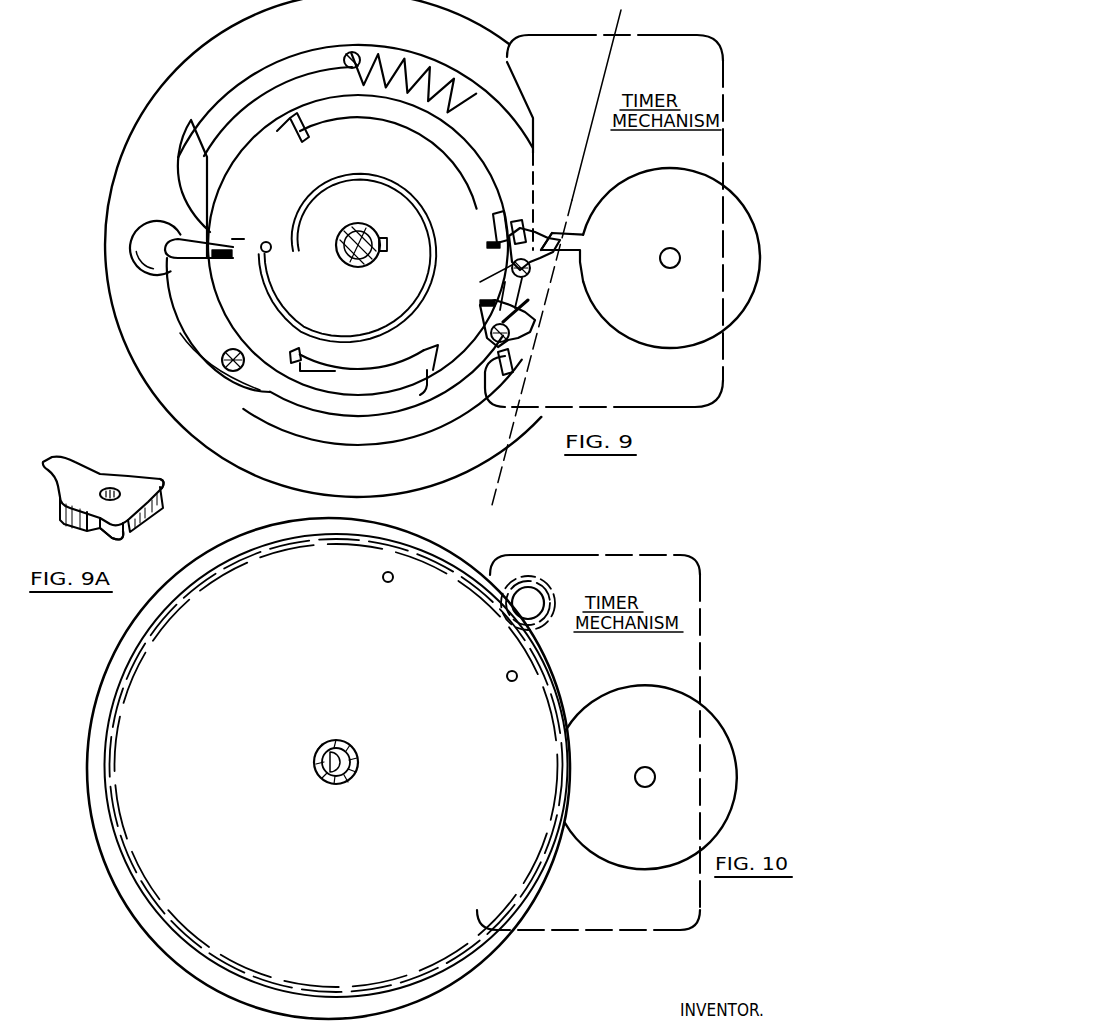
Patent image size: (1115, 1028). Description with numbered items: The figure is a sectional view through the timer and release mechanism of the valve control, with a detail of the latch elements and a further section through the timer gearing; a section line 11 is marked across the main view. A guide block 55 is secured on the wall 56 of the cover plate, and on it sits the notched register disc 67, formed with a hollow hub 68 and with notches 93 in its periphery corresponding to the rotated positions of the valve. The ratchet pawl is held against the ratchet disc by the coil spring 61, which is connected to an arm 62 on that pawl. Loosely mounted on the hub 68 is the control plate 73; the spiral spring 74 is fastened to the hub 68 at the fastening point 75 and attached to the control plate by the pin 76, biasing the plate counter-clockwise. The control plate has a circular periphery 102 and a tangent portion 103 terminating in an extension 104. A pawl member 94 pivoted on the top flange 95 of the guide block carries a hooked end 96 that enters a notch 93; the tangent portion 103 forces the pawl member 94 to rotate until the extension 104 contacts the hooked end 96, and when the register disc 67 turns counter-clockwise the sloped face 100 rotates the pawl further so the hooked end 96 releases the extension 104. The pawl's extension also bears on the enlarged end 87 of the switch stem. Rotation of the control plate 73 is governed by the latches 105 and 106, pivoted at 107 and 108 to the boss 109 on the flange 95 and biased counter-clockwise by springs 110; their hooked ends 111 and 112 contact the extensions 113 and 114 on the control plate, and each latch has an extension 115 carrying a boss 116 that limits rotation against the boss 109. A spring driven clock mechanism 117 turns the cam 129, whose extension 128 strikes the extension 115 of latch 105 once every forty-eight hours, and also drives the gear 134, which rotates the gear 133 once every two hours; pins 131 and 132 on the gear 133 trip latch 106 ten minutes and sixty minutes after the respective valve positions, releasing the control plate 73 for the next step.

In FIG. 9, the section line 11 is at (613, 15).
In FIG. 9, the guide block 55 is at (286, 86).
In FIG. 9, the wall 56 is at (236, 87).
In FIG. 9, the coil spring 61 is at (412, 78).
In FIG. 9, the arm 62 is at (353, 52).
In FIG. 9, the notched register disc 67 is at (240, 147).
In FIG. 9, the hollow hub 68 is at (348, 236).
In FIG. 10, the hollow hub 68 is at (336, 762).
In FIG. 9, the control plate 73 is at (300, 360).
In FIG. 9, the spiral spring 74 is at (322, 330).
In FIG. 9, the fastening point 75 is at (386, 238).
In FIG. 9, the pin 76 is at (270, 238).
In FIG. 9, the enlarged end 87 is at (157, 226).
In FIG. 9, the notches 93 is at (228, 237).
In FIG. 9, the pawl member 94 is at (178, 310).
In FIG. 9, the top flange 95 is at (447, 405).
In FIG. 9, the hooked end 96 is at (212, 255).
In FIG. 9, the sloped face 100 is at (200, 235).
In FIG. 9, the circular periphery 102 is at (389, 130).
In FIG. 9, the tangent portion 103 is at (262, 176).
In FIG. 9, the extension 104 is at (296, 140).
In FIG. 9, the latch 105 is at (532, 276).
In FIG. 9A, the latch 105 is at (72, 460).
In FIG. 9, the latch 106 is at (531, 340).
In FIG. 9A, the latch 106 is at (103, 498).
In FIG. 9, the pivot 107 is at (492, 333).
In FIG. 9, the pivot 108 is at (480, 282).
In FIG. 9, the boss 109 is at (515, 318).
In FIG. 9, the springs 110 is at (515, 221).
In FIG. 9, the hooked end 111 is at (487, 245).
In FIG. 9A, the hooked end 111 is at (47, 462).
In FIG. 9, the hooked end 112 is at (480, 303).
In FIG. 9A, the hooked end 112 is at (48, 461).
In FIG. 9, the extension 113 is at (500, 256).
In FIG. 9, the extension 114 is at (302, 124).
In FIG. 9A, the extension 115 is at (165, 488).
In FIG. 9A, the boss 116 is at (117, 540).
In FIG. 9, the spring driven clock mechanism 117 is at (696, 404).
In FIG. 10, the spring driven clock mechanism 117 is at (588, 742).
In FIG. 9, the extension 128 is at (560, 212).
In FIG. 9, the cam 129 is at (722, 186).
In FIG. 10, the cam 129 is at (720, 733).
In FIG. 10, the pin 131 is at (508, 682).
In FIG. 10, the pin 132 is at (388, 583).
In FIG. 10, the gear 133 is at (178, 970).
In FIG. 10, the gear 134 is at (538, 586).